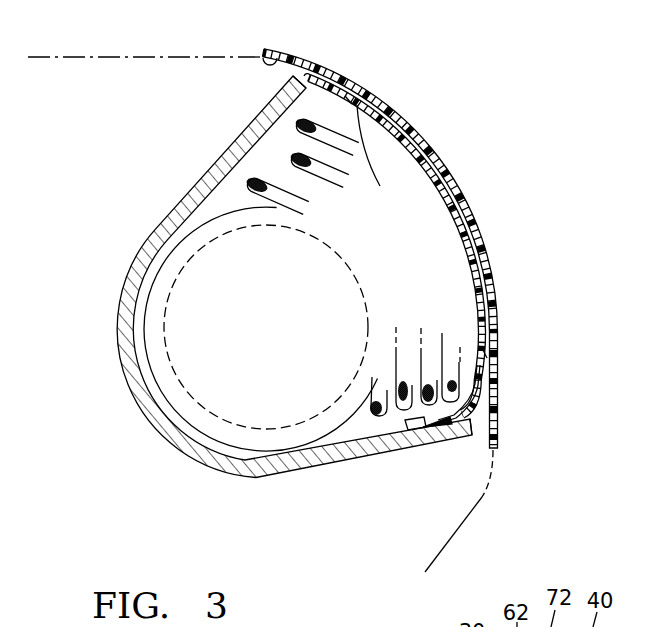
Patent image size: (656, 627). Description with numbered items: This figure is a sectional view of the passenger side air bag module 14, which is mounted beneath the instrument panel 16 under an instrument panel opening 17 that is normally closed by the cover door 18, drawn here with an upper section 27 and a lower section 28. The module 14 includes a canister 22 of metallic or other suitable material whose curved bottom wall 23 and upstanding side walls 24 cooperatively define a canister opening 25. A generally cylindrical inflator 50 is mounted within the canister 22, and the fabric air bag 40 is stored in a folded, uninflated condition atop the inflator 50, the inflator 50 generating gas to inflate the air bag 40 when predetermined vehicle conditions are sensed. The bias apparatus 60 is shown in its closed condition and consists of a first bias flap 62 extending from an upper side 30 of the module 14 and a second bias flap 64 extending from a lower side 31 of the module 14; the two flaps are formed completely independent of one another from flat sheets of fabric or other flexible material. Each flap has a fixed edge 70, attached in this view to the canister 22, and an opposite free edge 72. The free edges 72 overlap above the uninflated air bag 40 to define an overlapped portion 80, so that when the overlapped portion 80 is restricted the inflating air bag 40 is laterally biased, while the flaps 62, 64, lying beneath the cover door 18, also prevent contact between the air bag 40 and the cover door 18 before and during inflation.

The passenger side air bag module 14 is at (248, 307).
The instrument panel 16 is at (197, 57).
The instrument panel opening 17 is at (287, 43).
The cover door 18 is at (505, 330).
The canister 22 is at (189, 177).
The curved bottom wall 23 is at (148, 395).
The upstanding side walls 24 is at (222, 160).
The canister opening 25 is at (306, 78).
The upper section 27 is at (418, 128).
The lower section 28 is at (490, 293).
The upper side 30 is at (283, 97).
The lower side 31 is at (428, 448).
The air bag 40 is at (443, 383).
The inflator 50 is at (167, 342).
The bias apparatus 60 is at (477, 214).
The first bias flap 62 is at (346, 100).
The second bias flap 64 is at (492, 365).
The fixed edge 70 is at (278, 123).
The free edge 72 is at (608, 347).
The overlapped portion 80 is at (453, 183).